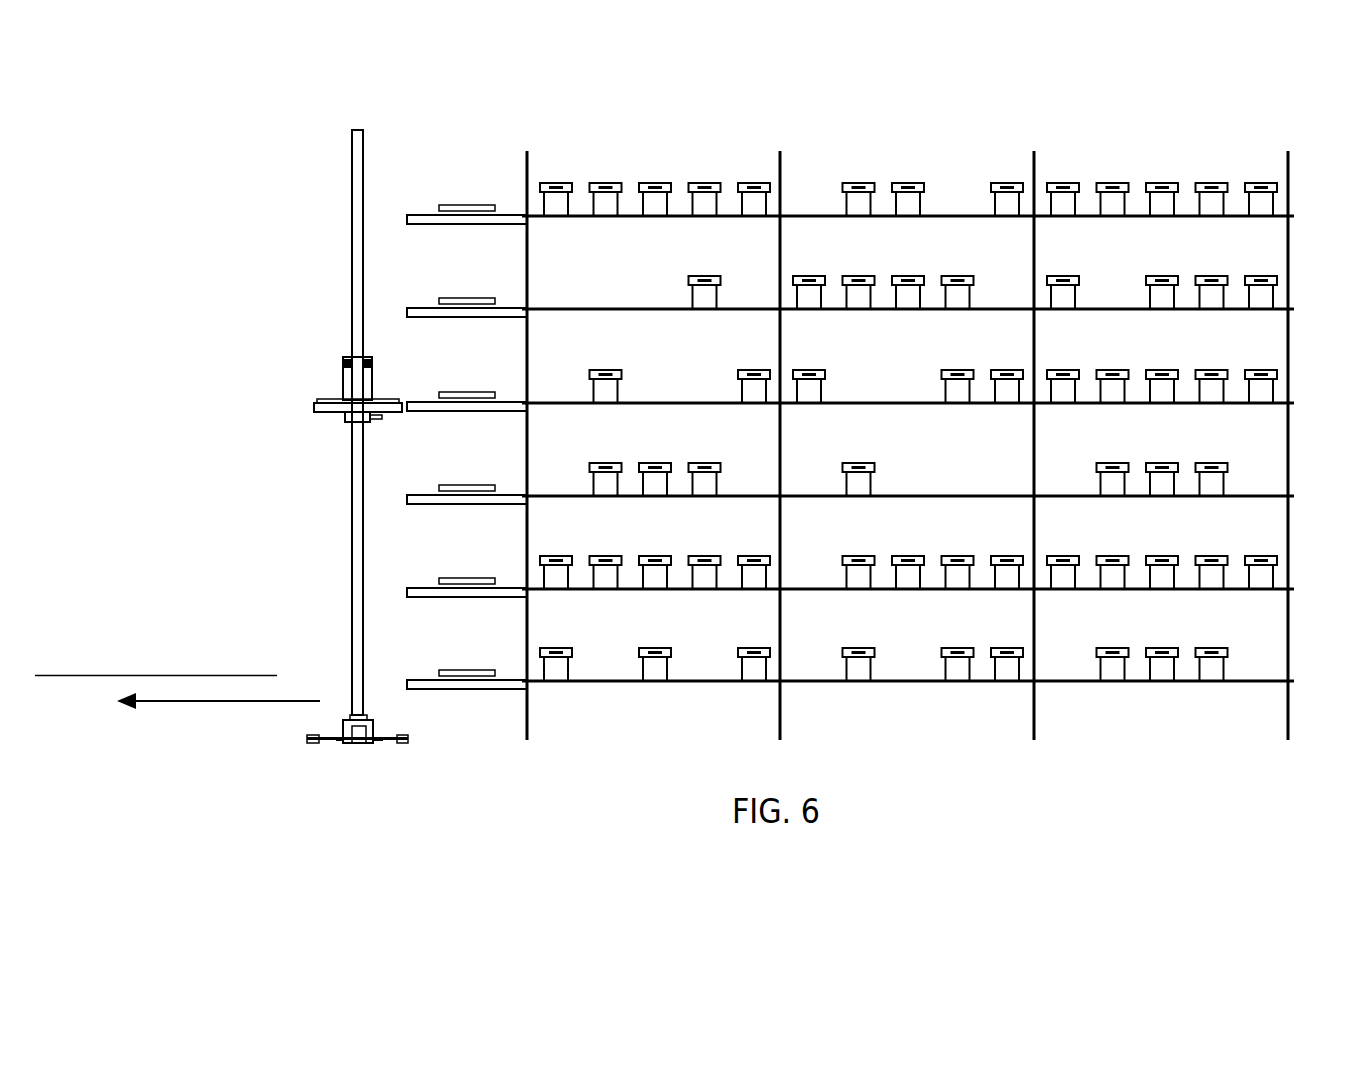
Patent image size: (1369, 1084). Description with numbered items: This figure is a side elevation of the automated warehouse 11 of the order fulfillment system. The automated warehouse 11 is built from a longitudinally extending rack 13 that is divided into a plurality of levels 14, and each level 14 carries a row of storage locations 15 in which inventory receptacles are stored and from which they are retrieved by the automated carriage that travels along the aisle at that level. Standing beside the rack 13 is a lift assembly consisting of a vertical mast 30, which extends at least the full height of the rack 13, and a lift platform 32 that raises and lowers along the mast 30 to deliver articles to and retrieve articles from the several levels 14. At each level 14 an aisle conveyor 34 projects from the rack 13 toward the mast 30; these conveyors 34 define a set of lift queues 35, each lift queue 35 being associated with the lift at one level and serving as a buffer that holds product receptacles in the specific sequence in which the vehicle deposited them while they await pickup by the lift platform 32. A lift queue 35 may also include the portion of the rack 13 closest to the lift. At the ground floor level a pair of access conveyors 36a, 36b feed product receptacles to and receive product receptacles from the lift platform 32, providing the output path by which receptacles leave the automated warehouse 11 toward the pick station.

The automated warehouse 11 is at (1157, 117).
The rack 13 is at (1296, 155).
The level 14 is at (1236, 216).
The storage location 15 is at (810, 370).
The vertical mast 30 is at (360, 168).
The lift platform 32 is at (333, 402).
The aisle conveyor 34 is at (447, 224).
The lift queue 35 is at (583, 166).
The access conveyor 36a is at (177, 714).
The access conveyor 36b is at (203, 702).